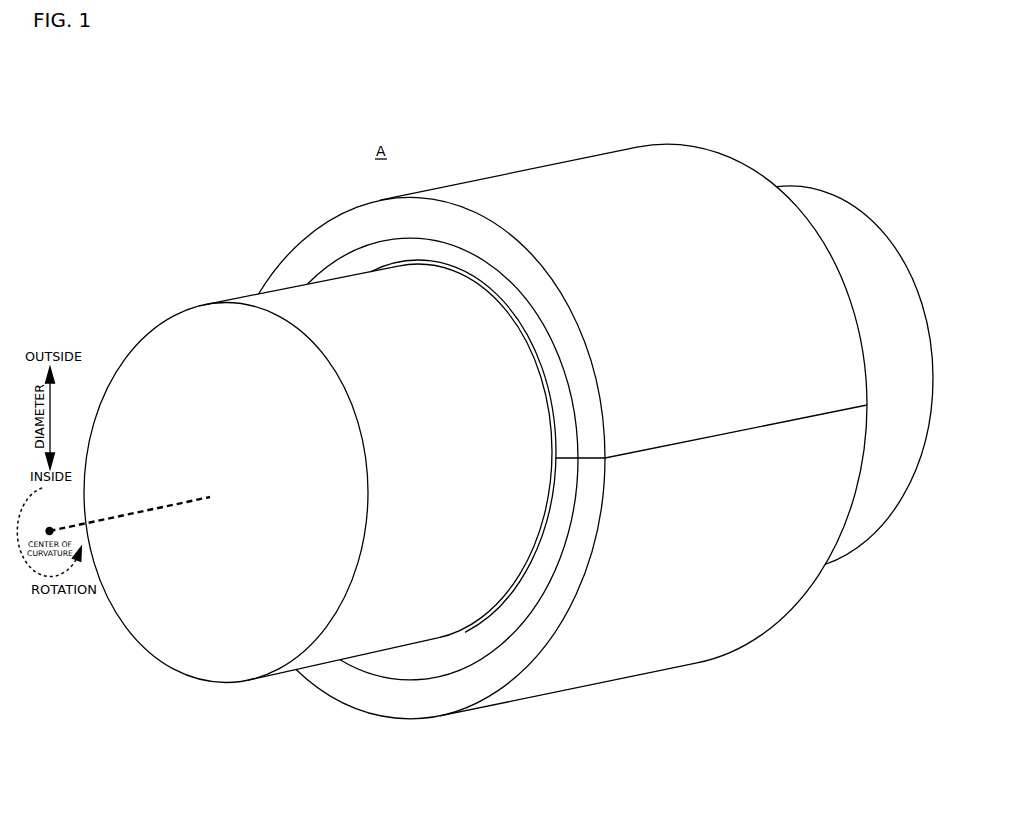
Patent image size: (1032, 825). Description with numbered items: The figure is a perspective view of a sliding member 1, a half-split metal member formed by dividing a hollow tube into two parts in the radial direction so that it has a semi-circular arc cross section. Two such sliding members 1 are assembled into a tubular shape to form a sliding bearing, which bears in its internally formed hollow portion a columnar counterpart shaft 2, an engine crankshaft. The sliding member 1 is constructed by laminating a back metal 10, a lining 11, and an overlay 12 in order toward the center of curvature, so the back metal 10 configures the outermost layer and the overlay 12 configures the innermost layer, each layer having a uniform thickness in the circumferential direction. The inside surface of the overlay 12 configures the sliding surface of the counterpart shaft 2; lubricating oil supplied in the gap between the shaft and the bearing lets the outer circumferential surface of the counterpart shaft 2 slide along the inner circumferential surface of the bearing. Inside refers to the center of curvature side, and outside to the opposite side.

The sliding member 1 is at (490, 177).
The counterpart shaft 2 is at (168, 316).
The back metal 10 is at (407, 208).
The lining 11 is at (390, 247).
The overlay 12 is at (380, 265).